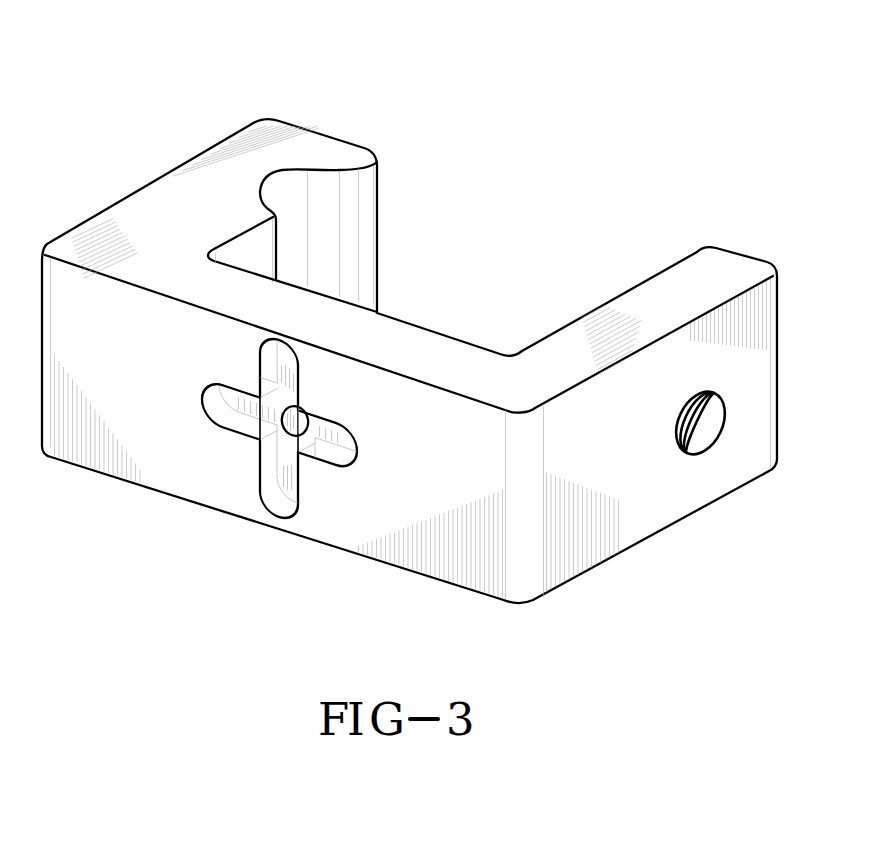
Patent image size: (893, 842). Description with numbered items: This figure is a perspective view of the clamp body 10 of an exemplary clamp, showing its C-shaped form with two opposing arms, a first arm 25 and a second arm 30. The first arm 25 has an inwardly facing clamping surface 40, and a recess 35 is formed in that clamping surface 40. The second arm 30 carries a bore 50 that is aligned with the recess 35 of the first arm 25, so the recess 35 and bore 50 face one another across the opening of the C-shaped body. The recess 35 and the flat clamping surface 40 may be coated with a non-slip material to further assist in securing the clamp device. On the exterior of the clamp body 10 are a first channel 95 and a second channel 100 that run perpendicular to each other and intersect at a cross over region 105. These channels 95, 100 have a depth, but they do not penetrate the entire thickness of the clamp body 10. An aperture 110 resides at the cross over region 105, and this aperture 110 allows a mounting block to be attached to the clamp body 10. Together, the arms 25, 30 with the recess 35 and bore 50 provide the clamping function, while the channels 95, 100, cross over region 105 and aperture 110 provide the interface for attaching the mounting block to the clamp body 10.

The clamp body 10 is at (465, 107).
The first arm 25 is at (153, 213).
The second arm 30 is at (677, 292).
The recess 35 is at (287, 200).
The clamping surface 40 is at (233, 254).
The bore 50 is at (711, 420).
The first channel 95 is at (228, 407).
The second channel 100 is at (292, 366).
The cross over region 105 is at (284, 433).
The aperture 110 is at (295, 426).